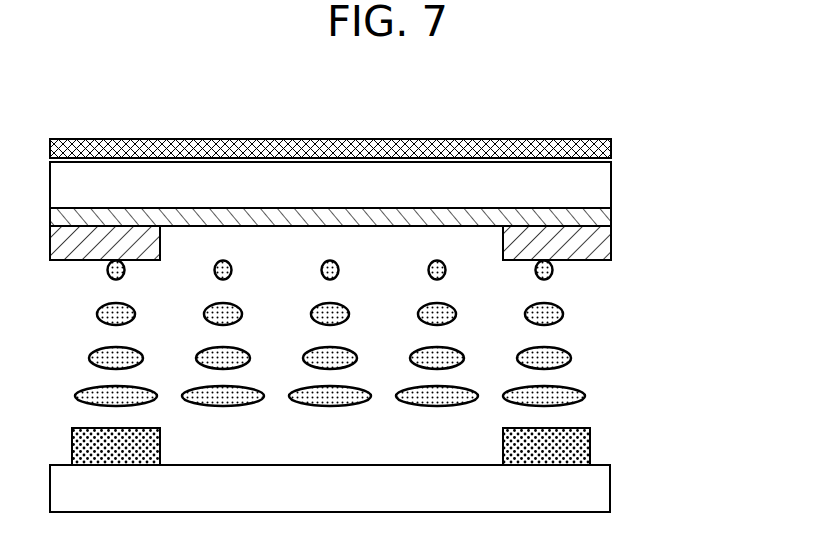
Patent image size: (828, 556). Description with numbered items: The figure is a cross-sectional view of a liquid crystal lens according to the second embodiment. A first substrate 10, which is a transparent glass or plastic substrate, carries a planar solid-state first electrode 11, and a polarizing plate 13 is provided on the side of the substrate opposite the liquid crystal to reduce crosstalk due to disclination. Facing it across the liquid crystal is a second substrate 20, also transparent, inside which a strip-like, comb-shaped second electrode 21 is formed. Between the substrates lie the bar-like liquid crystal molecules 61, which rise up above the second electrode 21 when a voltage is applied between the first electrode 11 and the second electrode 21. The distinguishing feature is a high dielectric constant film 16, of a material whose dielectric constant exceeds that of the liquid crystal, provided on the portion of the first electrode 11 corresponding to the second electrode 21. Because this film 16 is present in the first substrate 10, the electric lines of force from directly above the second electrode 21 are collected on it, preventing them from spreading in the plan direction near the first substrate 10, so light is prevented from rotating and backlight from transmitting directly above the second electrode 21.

The polarizing plate 13 is at (578, 139).
The first substrate 10 is at (612, 183).
The first electrode 11 is at (612, 216).
The high dielectric constant film 16 is at (612, 245).
The liquid crystal molecules 61 is at (571, 352).
The second electrode 21 is at (590, 445).
The second substrate 20 is at (611, 490).